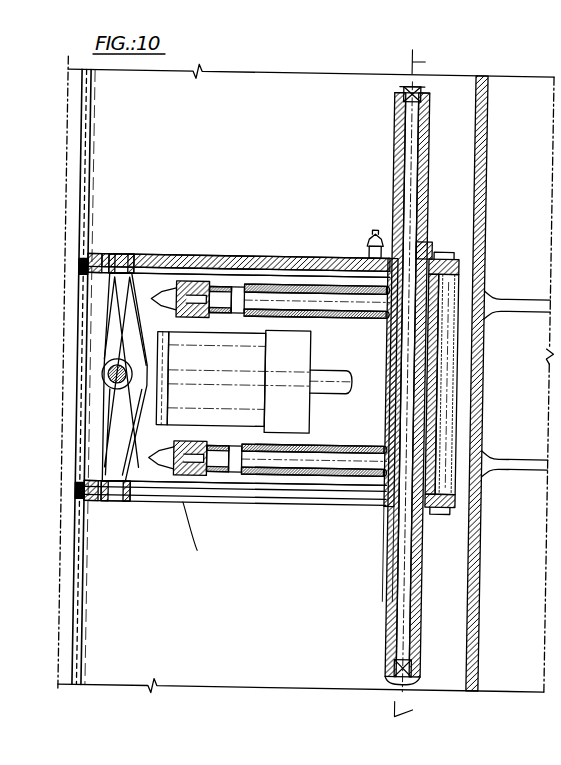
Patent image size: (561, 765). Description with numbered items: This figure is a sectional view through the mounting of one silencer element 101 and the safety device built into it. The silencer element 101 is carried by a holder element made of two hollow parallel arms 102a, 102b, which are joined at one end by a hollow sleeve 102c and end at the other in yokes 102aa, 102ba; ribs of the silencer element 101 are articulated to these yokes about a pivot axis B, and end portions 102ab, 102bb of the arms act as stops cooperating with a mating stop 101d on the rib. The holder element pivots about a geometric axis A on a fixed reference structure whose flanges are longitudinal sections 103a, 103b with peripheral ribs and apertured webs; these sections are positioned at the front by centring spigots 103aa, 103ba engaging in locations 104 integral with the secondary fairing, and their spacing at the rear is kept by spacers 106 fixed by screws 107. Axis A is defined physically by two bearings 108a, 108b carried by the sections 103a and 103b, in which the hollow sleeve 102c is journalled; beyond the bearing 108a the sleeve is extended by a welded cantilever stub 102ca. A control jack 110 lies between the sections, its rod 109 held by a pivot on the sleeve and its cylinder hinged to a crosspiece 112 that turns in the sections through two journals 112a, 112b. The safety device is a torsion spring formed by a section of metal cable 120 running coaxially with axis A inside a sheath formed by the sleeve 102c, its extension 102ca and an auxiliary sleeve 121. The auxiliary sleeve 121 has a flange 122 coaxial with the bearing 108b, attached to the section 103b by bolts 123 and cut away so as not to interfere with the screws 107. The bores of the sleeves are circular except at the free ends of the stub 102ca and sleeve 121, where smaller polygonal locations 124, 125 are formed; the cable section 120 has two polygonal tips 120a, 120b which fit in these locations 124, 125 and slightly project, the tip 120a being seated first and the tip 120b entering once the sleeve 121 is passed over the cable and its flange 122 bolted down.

The silencer element 101 is at (380, 440).
The mating stop 101d is at (160, 300).
The hollow arm 102a is at (290, 475).
The yoke 102aa is at (212, 447).
The stop portion 102ab is at (222, 475).
The hollow arm 102b is at (271, 285).
The yoke 102ba is at (220, 285).
The stop portion 102bb is at (236, 288).
The hollow sleeve 102c is at (365, 413).
The cantilever stub 102ca is at (388, 578).
The longitudinal section 103a is at (178, 504).
The centring spigot 103aa is at (92, 505).
The longitudinal section 103b is at (180, 262).
The centring spigot 103ba is at (94, 257).
The location 104 is at (86, 270).
The spacer 106 is at (455, 395).
The screw 107 is at (452, 268).
The bearing 108a is at (432, 505).
The bearing 108b is at (437, 257).
The rod 109 is at (333, 372).
The actuating jack 110 is at (235, 356).
The crosspiece 112 is at (104, 422).
The journal 112a is at (118, 505).
The journal 112b is at (115, 257).
The metal cable section 120 is at (415, 185).
The polygonal tip 120a is at (416, 662).
The polygonal tip 120b is at (407, 85).
The auxiliary sleeve 121 is at (396, 180).
The flange 122 is at (421, 240).
The bolt 123 is at (375, 228).
The polygonal location 124 is at (408, 658).
The polygonal location 125 is at (418, 97).
The geometric axis A is at (418, 383).
The pivot axis B is at (196, 534).